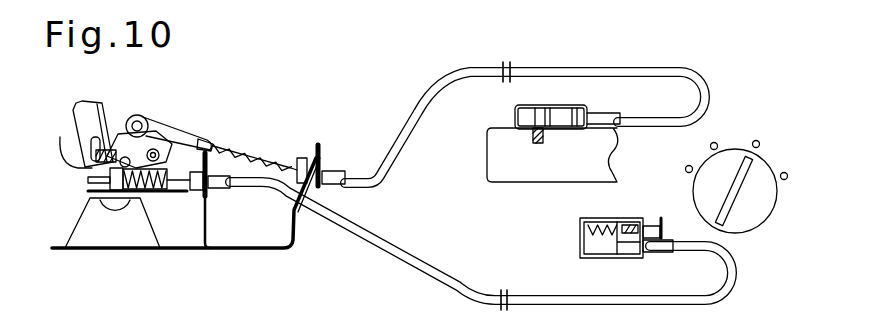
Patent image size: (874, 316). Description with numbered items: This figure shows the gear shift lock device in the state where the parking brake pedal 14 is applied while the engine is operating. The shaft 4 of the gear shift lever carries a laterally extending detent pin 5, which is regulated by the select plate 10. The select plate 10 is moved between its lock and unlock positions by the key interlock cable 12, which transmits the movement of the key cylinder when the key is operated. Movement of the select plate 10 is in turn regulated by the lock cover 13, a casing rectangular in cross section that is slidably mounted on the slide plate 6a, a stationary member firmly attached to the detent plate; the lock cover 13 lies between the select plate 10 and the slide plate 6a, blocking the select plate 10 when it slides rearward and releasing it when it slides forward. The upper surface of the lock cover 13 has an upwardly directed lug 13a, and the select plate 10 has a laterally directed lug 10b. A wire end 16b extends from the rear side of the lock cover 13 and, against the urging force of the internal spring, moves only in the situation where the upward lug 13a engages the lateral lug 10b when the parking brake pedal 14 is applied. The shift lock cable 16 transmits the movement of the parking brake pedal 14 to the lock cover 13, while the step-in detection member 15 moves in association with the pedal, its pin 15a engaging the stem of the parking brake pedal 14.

The shaft 4 is at (72, 118).
The detent pin 5 is at (83, 153).
The slide plate 6a is at (156, 199).
The select plate 10 is at (125, 116).
The lateral lug 10b is at (143, 116).
The key interlock cable 12 is at (268, 157).
The lock cover 13 is at (155, 136).
The upward lug 13a is at (88, 176).
The parking brake pedal 14 is at (663, 237).
The step-in detection member 15 is at (580, 240).
The pin 15a is at (655, 222).
The shift lock cable 16 is at (160, 172).
The wire end 16b is at (88, 191).